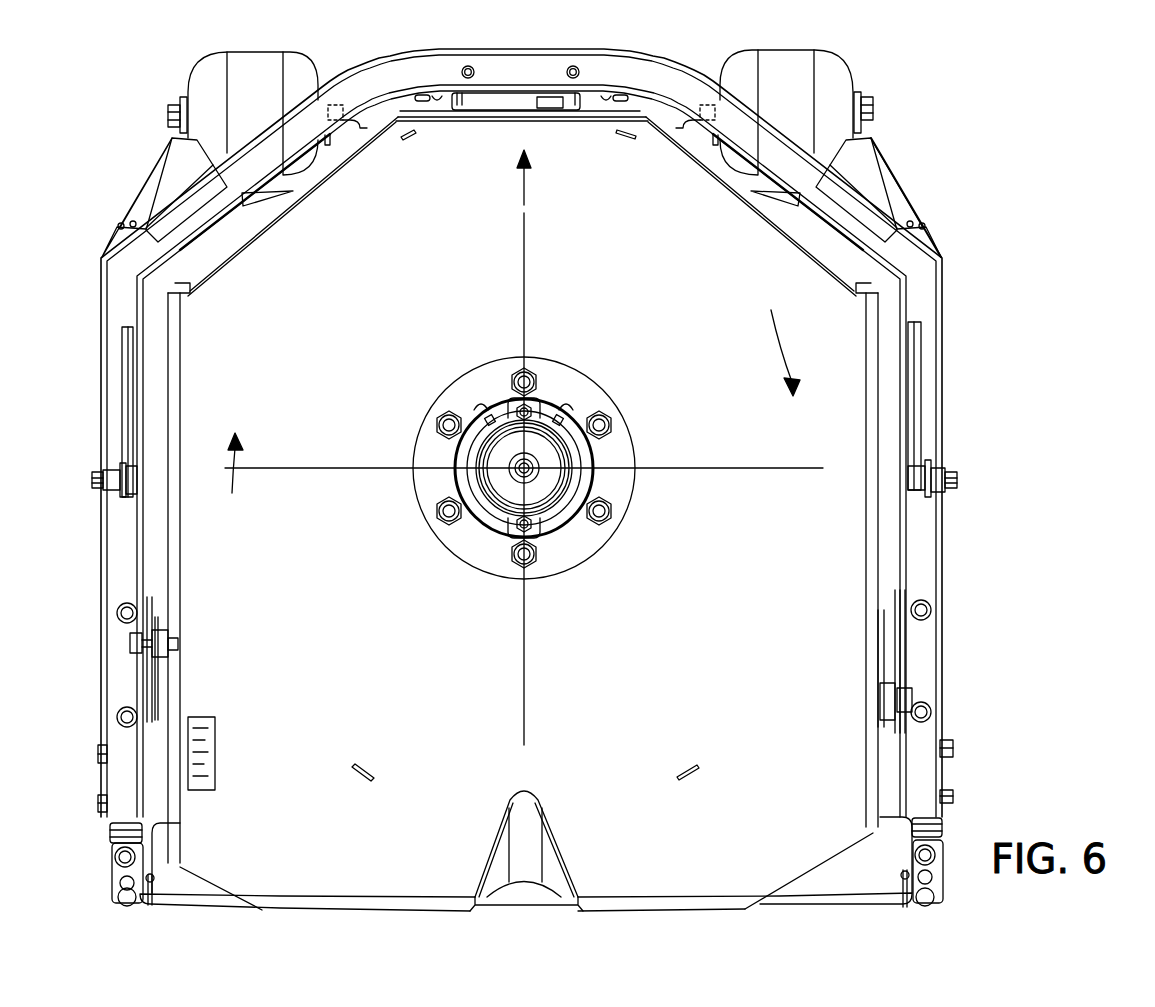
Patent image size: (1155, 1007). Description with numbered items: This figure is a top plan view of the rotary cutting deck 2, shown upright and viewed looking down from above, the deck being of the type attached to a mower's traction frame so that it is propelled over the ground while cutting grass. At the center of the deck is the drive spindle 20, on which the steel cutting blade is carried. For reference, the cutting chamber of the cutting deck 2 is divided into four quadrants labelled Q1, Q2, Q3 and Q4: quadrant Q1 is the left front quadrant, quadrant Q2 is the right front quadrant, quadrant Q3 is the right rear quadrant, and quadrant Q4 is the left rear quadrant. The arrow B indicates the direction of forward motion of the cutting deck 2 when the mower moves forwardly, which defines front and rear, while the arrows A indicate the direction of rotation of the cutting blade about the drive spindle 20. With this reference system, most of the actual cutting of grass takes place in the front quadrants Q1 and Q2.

The rotary cutting deck 2 is at (914, 126).
The drive spindle 20 is at (538, 456).
The arrow indicating direction of blade rotation A is at (232, 490).
The arrow indicating direction of forward motion B is at (524, 183).
The quadrant 1 Q1 is at (389, 218).
The quadrant 2 Q2 is at (652, 218).
The quadrant 3 Q3 is at (678, 702).
The quadrant 4 Q4 is at (370, 702).